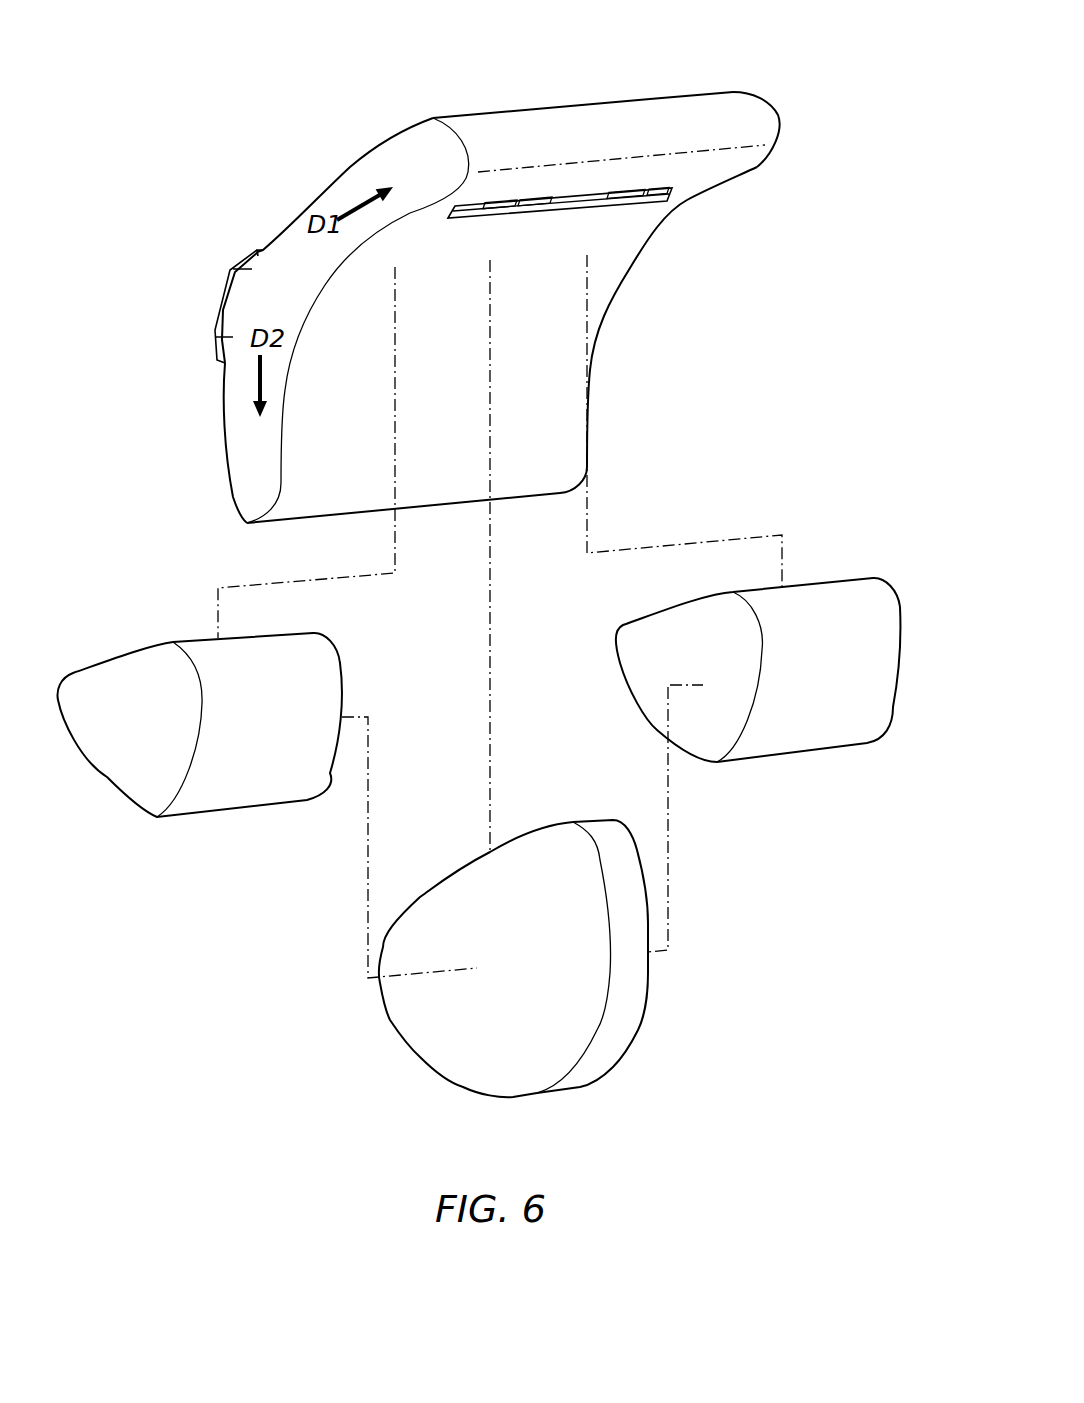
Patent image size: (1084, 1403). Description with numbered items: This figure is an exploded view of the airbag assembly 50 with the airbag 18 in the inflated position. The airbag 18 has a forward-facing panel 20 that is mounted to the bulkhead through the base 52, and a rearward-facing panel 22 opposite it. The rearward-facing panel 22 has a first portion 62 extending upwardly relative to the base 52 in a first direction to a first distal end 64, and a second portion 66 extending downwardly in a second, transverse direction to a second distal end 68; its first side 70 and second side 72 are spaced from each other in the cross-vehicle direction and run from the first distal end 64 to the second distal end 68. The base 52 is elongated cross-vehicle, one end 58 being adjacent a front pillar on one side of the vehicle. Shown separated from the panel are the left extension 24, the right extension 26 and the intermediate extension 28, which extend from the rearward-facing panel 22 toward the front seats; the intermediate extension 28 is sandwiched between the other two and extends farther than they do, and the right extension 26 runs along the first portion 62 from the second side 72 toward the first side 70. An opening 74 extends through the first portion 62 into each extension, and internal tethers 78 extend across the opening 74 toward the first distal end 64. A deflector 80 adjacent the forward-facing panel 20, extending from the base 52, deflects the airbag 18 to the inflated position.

The airbag assembly 50 is at (257, 70).
The airbag 18 is at (410, 118).
The forward-facing panel 20 is at (342, 173).
The rearward-facing panel 22 is at (355, 403).
The left extension 24 is at (240, 808).
The right extension 26 is at (793, 753).
The intermediate extension 28 is at (410, 1050).
The base 52 is at (217, 283).
The end 58 is at (220, 318).
The first portion 62 is at (743, 83).
The first distal end 64 is at (778, 120).
The second portion 66 is at (247, 457).
The second distal end 68 is at (247, 523).
The first side 70 is at (442, 176).
The second side 72 is at (620, 270).
The opening 74 is at (573, 213).
The internal tethers 78 is at (500, 207).
The deflector 80 is at (260, 248).